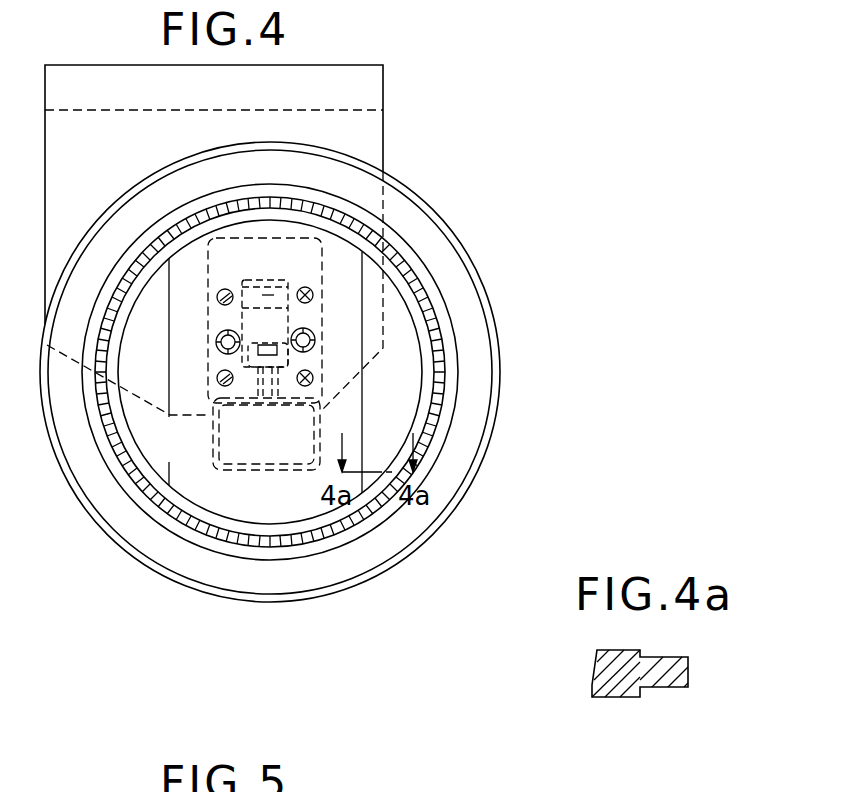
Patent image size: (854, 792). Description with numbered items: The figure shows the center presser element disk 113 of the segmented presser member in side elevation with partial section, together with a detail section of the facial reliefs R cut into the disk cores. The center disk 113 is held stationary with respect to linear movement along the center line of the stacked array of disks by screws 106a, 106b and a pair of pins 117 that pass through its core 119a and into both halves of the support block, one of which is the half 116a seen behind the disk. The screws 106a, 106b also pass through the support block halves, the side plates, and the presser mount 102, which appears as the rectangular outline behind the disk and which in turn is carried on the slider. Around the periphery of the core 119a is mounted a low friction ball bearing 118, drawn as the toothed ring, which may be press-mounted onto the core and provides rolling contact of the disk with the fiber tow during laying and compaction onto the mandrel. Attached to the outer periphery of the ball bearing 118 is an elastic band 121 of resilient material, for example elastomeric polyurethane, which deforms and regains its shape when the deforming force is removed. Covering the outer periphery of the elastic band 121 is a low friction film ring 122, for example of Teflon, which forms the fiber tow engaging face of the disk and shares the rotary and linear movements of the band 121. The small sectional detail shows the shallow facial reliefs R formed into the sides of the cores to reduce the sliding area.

In FIG. 4, the presser mount 102 is at (100, 152).
In FIG. 4, the center disk 113 is at (462, 234).
In FIG. 4, the low friction film ring 122 is at (450, 522).
In FIG. 4, the elastic band 121 is at (367, 560).
In FIG. 4, the ball bearing 118 is at (218, 537).
In FIG. 4, the core 119a is at (207, 498).
In FIG. 4, the facial reliefs R is at (405, 330).
In FIG. 4a, the facial reliefs R is at (667, 658).
In FIG. 4, the support block half 116a is at (298, 253).
In FIG. 4, the screw 106a is at (306, 289).
In FIG. 4, the screw 106b is at (218, 293).
In FIG. 4, the pins 117 is at (216, 342).